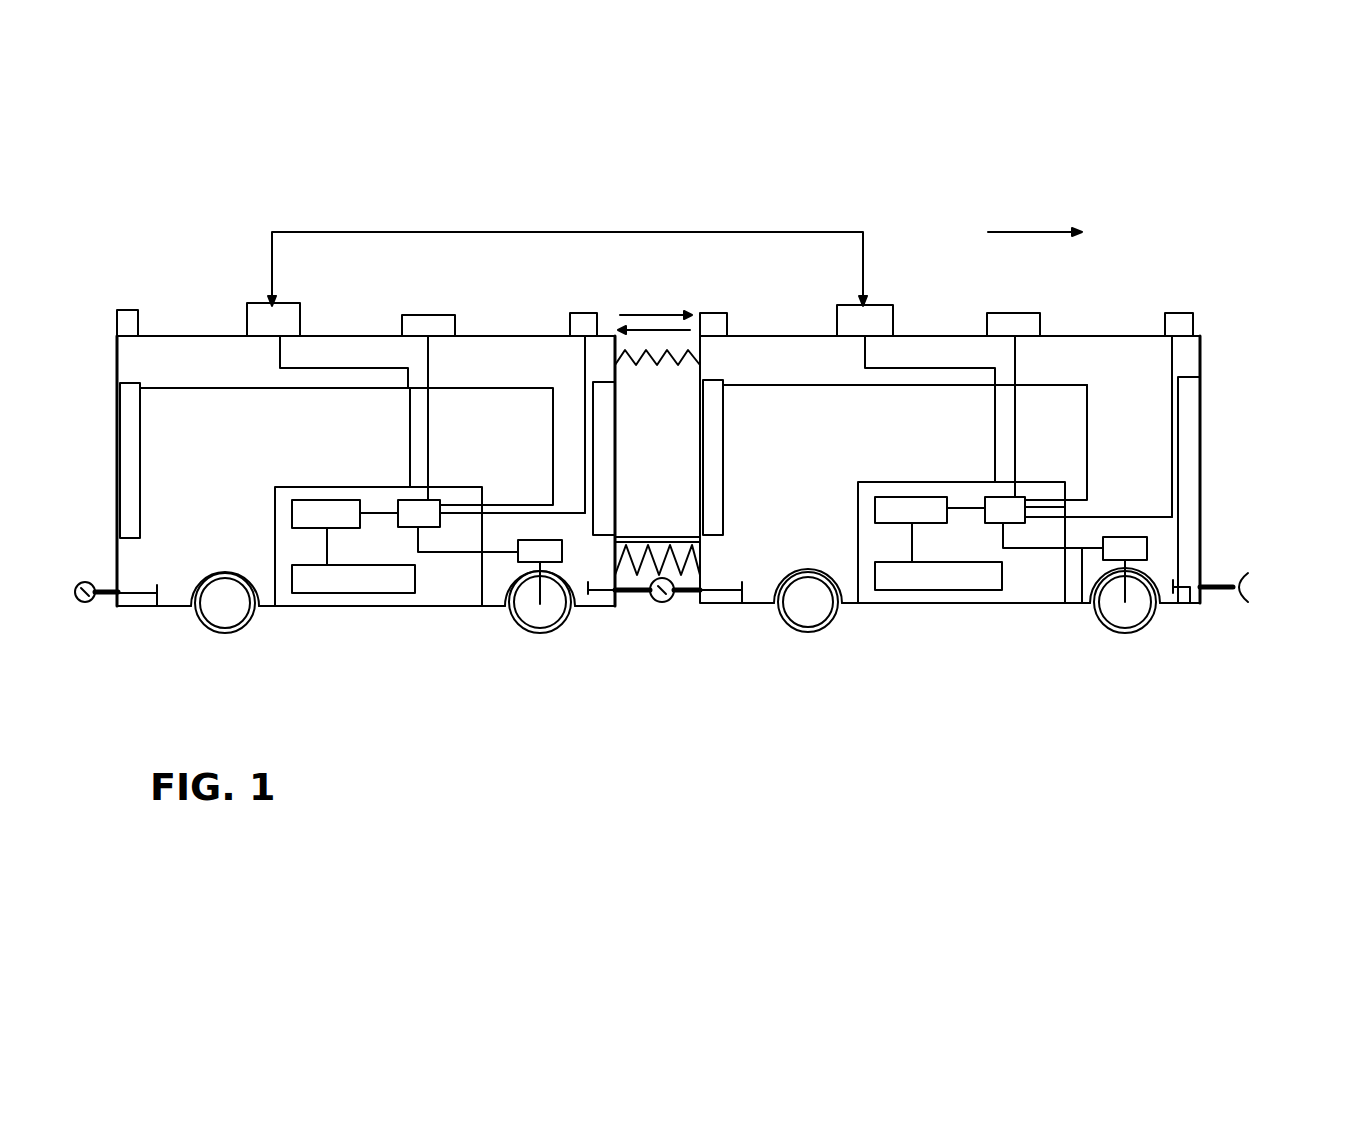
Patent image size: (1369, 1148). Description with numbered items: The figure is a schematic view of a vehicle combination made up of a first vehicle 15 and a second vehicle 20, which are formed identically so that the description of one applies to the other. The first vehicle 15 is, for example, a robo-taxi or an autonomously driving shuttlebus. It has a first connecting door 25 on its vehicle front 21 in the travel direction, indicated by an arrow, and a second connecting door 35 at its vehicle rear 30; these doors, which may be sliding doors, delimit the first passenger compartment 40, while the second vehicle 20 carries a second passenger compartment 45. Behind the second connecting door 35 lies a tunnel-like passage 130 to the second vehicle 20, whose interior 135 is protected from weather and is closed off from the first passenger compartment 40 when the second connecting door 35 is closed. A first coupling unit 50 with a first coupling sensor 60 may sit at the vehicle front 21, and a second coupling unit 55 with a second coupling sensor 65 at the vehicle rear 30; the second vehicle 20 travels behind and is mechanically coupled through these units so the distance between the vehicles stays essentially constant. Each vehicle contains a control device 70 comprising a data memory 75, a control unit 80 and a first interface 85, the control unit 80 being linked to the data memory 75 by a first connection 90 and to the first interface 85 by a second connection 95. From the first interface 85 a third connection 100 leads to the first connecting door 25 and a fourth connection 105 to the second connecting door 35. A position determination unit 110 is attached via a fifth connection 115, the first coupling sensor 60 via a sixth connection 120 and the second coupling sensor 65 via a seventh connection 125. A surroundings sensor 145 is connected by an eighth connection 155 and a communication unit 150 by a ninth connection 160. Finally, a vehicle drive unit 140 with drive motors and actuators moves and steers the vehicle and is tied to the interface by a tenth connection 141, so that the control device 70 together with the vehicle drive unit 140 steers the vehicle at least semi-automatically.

The first vehicle 15 is at (1210, 640).
The second vehicle 20 is at (623, 647).
The vehicle front 21 is at (1209, 367).
The first connecting door 25 is at (1193, 407).
The vehicle rear 30 is at (700, 518).
The second connecting door 35 is at (715, 410).
The first passenger compartment 40 is at (792, 358).
The second passenger compartment 45 is at (365, 352).
The first coupling unit 50 is at (677, 625).
The second coupling unit 55 is at (659, 641).
The first coupling sensor 60 is at (1240, 600).
The second coupling sensor 65 is at (667, 598).
The control device 70 is at (885, 500).
The data memory 75 is at (923, 613).
The control unit 80 is at (888, 497).
The first interface 85 is at (963, 538).
The first connection 90 is at (912, 545).
The second connection 95 is at (960, 508).
The third connection 100 is at (1132, 513).
The fourth connection 105 is at (1087, 388).
The position determination unit 110 is at (1192, 322).
The fifth connection 115 is at (1172, 432).
The sixth connection 120 is at (1187, 603).
The seventh connection 125 is at (725, 590).
The passage 130 is at (620, 355).
The interior 135 is at (643, 457).
The vehicle drive unit 140 is at (1130, 545).
The tenth connection 141 is at (1082, 605).
The surroundings sensor 145 is at (1022, 326).
The communication unit 150 is at (888, 318).
The eighth connection 155 is at (1015, 352).
The ninth connection 160 is at (995, 410).